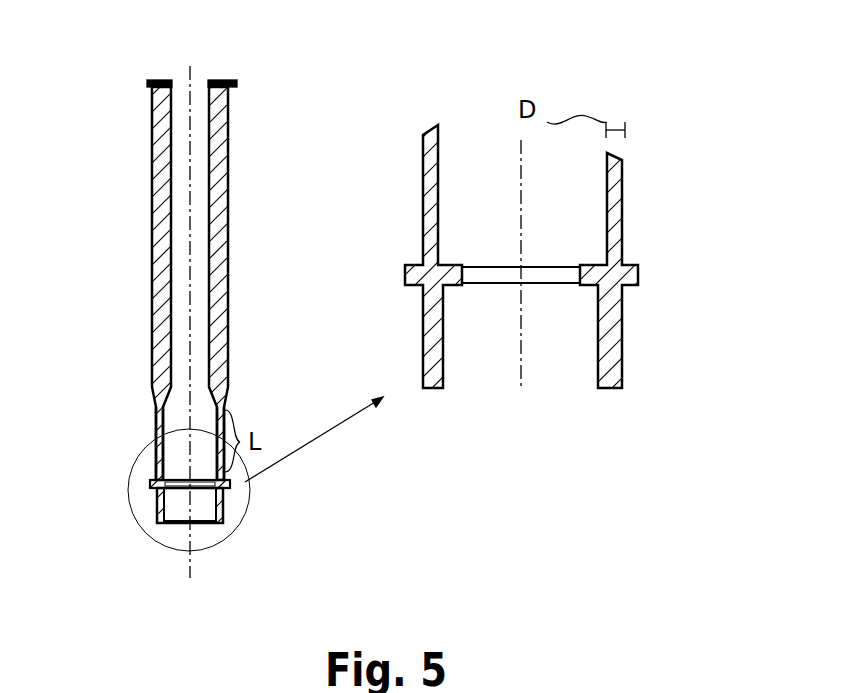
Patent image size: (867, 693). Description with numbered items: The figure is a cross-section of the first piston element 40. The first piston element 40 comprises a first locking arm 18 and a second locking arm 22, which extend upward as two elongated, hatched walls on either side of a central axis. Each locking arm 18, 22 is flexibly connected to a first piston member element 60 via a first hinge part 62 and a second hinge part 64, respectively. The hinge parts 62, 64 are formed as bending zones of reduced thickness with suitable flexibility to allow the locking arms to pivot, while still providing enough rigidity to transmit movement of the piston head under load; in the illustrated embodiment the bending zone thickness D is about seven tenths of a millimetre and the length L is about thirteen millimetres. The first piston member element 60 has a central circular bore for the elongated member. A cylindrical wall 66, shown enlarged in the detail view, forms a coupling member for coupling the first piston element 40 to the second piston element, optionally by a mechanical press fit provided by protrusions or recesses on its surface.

The first locking arm 18 is at (158, 131).
The first piston element 40 is at (153, 213).
The second locking arm 22 is at (227, 223).
The first hinge part 62 is at (156, 442).
The second hinge part 64 is at (224, 463).
The first piston member element 60 is at (127, 488).
The cylindrical wall 66 is at (622, 312).